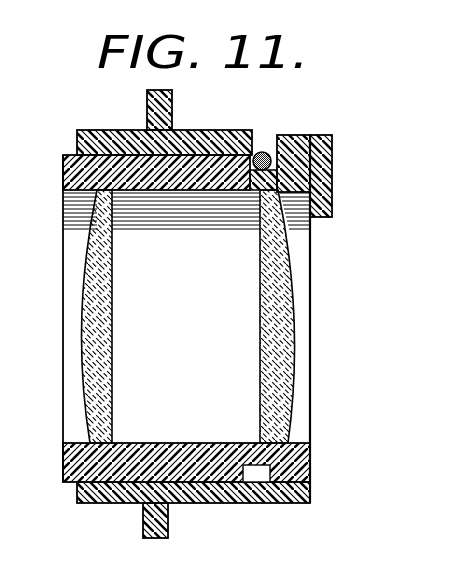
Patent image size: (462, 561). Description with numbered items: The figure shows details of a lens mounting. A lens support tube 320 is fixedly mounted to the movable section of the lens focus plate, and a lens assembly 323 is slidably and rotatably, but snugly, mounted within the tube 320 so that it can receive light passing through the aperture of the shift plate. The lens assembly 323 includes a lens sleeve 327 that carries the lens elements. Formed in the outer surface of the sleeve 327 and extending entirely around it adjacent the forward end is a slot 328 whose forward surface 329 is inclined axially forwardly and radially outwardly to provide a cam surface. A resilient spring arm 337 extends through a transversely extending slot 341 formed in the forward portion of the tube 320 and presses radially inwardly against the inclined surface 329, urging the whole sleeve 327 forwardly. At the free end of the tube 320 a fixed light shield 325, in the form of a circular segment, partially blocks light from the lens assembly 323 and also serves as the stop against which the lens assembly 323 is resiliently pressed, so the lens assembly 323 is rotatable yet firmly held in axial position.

The lens support tube 320 is at (193, 130).
The transversely extending slot 341 is at (270, 150).
The fixed light shield 325 is at (330, 160).
The spring arm 337 is at (250, 170).
The lens sleeve 327 is at (157, 192).
The lens assembly 323 is at (313, 389).
The forward surface 329 is at (268, 476).
The slot 328 is at (258, 480).